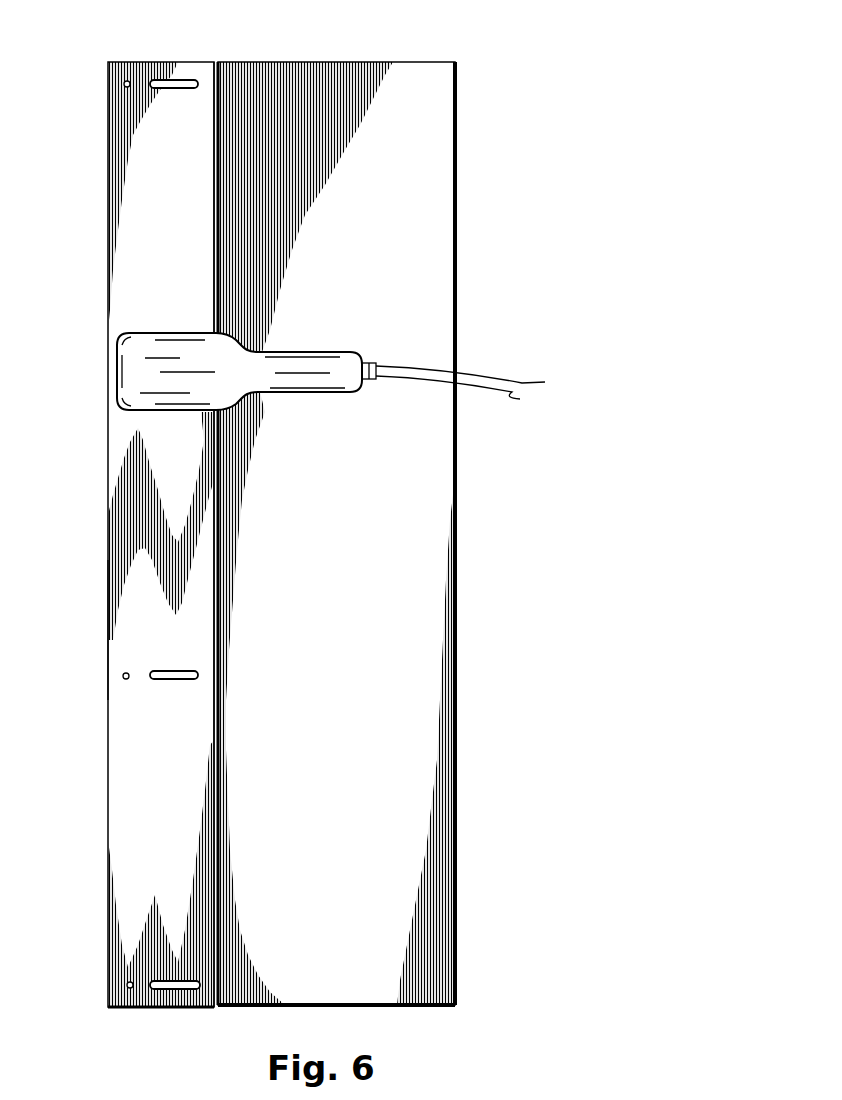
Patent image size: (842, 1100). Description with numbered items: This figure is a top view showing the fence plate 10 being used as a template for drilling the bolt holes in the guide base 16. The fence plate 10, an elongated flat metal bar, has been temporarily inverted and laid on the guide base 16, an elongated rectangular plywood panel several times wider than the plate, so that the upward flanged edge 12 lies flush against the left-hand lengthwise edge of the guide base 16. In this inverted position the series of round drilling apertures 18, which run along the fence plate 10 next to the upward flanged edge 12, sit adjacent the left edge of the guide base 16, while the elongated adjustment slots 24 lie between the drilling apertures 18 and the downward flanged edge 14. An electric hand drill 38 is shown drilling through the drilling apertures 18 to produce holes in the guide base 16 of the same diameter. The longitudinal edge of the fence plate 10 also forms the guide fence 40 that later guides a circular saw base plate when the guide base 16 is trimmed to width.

The fence plate 10 is at (140, 224).
The upward flanged edge 12 is at (108, 488).
The downward flanged edge 14 is at (220, 590).
The guide base 16 is at (333, 517).
The drilling apertures 18 is at (127, 80).
The adjustment slots 24 is at (178, 80).
The hand drill 38 is at (137, 355).
The guide fence 40 is at (108, 620).